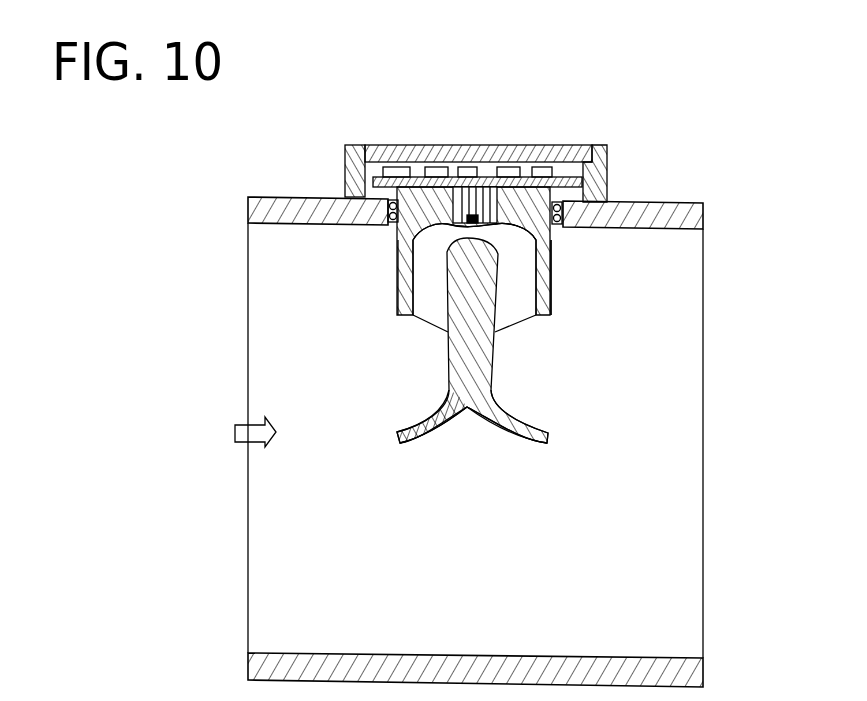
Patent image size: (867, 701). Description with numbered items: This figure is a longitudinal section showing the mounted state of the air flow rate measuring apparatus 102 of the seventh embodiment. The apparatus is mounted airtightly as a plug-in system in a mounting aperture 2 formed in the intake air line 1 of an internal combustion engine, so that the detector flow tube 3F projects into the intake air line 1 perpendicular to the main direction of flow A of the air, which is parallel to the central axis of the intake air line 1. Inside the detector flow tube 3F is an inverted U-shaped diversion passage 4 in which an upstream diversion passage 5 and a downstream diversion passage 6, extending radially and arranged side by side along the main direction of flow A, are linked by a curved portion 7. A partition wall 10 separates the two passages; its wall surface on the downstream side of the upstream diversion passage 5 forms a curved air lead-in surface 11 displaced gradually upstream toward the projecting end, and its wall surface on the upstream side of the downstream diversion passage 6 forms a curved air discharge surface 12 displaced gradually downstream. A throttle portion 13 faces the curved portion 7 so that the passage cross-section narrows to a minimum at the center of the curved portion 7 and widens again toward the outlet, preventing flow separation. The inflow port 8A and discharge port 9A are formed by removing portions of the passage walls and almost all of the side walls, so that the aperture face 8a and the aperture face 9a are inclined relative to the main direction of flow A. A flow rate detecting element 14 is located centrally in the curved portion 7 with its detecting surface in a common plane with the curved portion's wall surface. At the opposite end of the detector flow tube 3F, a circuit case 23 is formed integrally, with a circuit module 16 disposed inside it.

The intake air line 1 is at (697, 200).
The mounting aperture 2 is at (388, 196).
The detector flow tube 3F is at (393, 288).
The diversion passage 4 is at (527, 265).
The upstream diversion passage 5 is at (428, 270).
The downstream diversion passage 6 is at (523, 302).
The curved portion 7 is at (425, 231).
The aperture face of the inflow port 8a is at (420, 323).
The aperture face of the outflow port 9a is at (530, 328).
The inflow port 8A is at (408, 365).
The discharge port 9A is at (530, 378).
The partition wall 10 is at (445, 434).
The air lead-in surface 11 is at (428, 421).
The air discharge surface 12 is at (517, 420).
The throttle portion 13 is at (480, 250).
The flow rate detecting element 14 is at (533, 238).
The circuit module 16 is at (347, 162).
The circuit case 23 is at (612, 165).
The air flow rate measuring apparatus 102 is at (667, 130).
The main direction of flow A is at (240, 432).